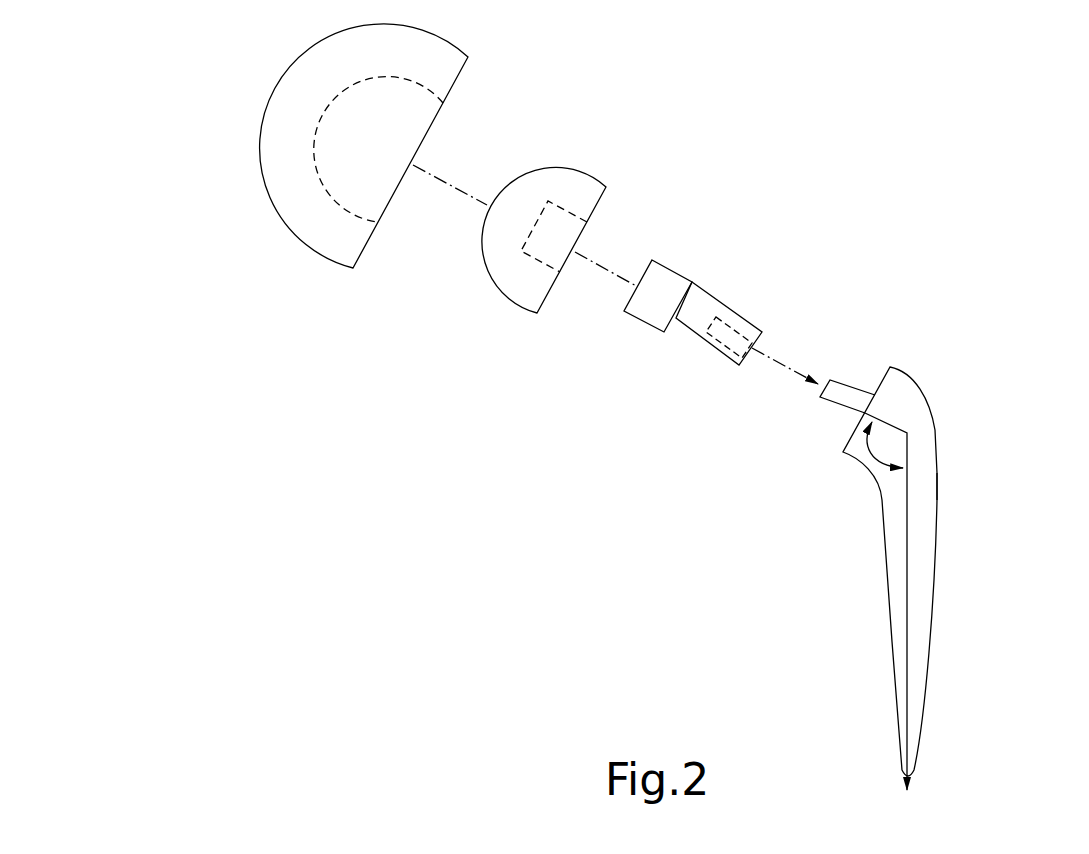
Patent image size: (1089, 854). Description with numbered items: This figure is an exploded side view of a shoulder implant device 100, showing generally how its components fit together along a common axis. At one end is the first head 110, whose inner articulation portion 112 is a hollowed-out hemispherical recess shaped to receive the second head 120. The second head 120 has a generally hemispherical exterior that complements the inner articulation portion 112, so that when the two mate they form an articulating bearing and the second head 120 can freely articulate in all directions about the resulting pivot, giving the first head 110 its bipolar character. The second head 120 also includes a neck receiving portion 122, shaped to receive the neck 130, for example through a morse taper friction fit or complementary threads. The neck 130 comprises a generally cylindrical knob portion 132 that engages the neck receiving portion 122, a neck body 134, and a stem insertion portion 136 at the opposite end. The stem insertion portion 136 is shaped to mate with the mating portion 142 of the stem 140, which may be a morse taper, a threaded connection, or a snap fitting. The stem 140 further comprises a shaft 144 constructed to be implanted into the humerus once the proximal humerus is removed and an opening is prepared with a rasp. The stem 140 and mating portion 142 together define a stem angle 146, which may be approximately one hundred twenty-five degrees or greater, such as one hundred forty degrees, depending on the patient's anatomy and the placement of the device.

The shoulder implant device 100 is at (893, 218).
The first head 110 is at (346, 146).
The inner articulation portion 112 is at (423, 108).
The second head 120 is at (532, 254).
The neck receiving portion 122 is at (580, 228).
The neck 130 is at (704, 323).
The knob portion 132 is at (643, 325).
The neck body 134 is at (735, 312).
The stem insertion portion 136 is at (753, 350).
The stem 140 is at (919, 557).
The mating portion 142 is at (850, 378).
The shaft 144 is at (928, 473).
The stem angle 146 is at (877, 457).